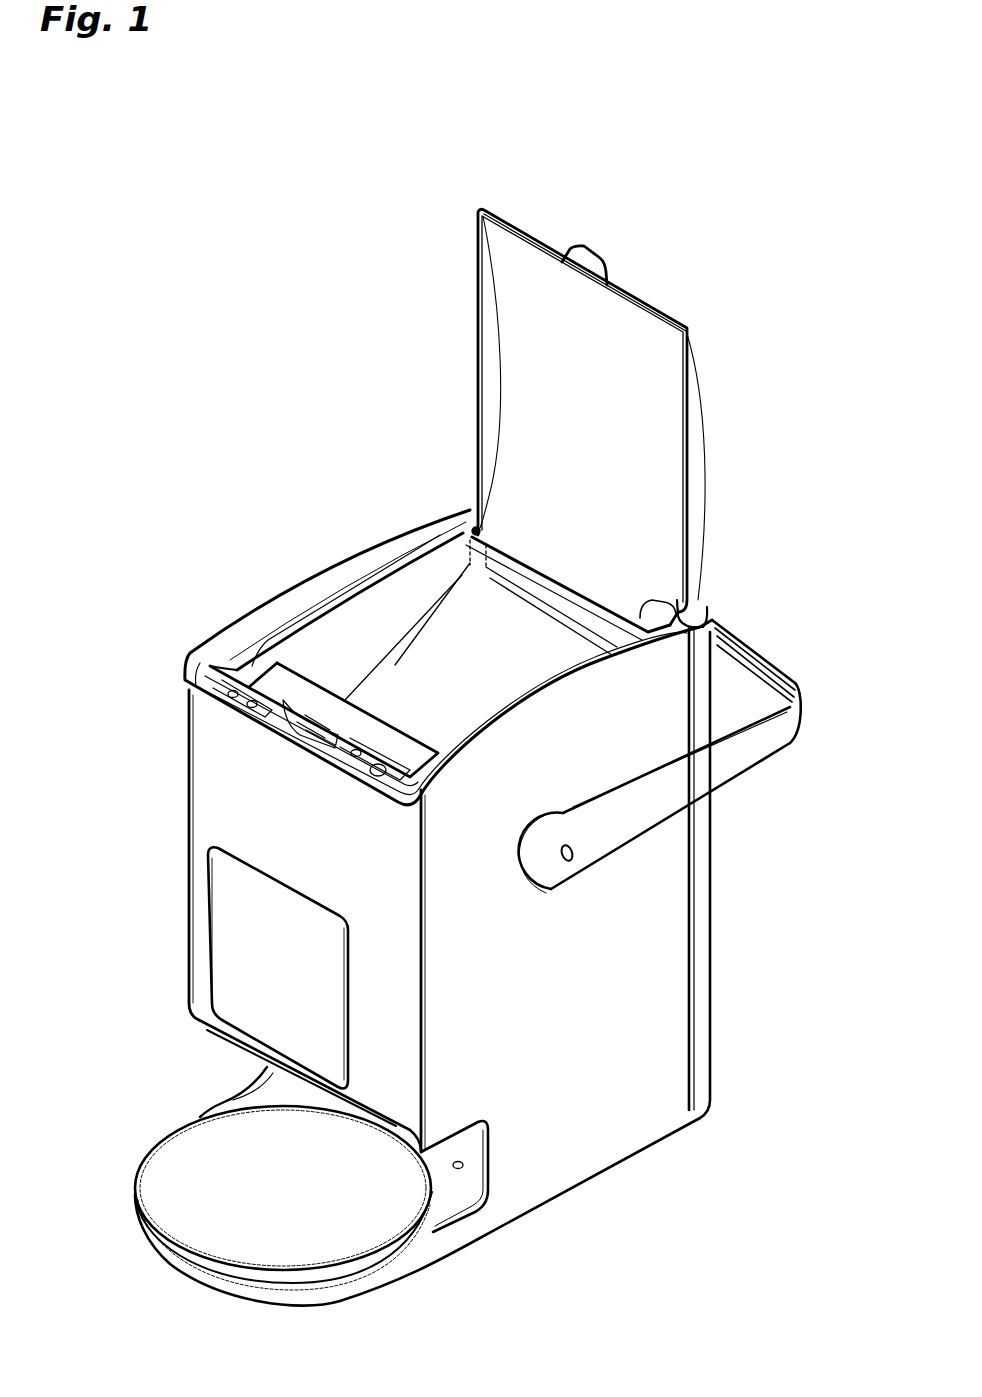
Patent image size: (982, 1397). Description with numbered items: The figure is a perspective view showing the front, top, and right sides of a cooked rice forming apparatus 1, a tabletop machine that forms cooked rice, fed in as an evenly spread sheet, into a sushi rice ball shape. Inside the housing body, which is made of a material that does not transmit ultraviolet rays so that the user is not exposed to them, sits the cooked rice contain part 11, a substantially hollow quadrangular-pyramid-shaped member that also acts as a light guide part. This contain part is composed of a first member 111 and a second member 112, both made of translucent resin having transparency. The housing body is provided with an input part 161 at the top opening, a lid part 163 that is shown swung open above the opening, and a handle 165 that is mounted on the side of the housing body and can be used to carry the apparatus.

The cooked rice forming apparatus 1 is at (466, 184).
The cooked rice contain part 11 is at (302, 491).
The first member 111 is at (345, 596).
The second member 112 is at (256, 672).
The input part 161 is at (640, 618).
The lid part 163 is at (700, 512).
The handle 165 is at (747, 640).